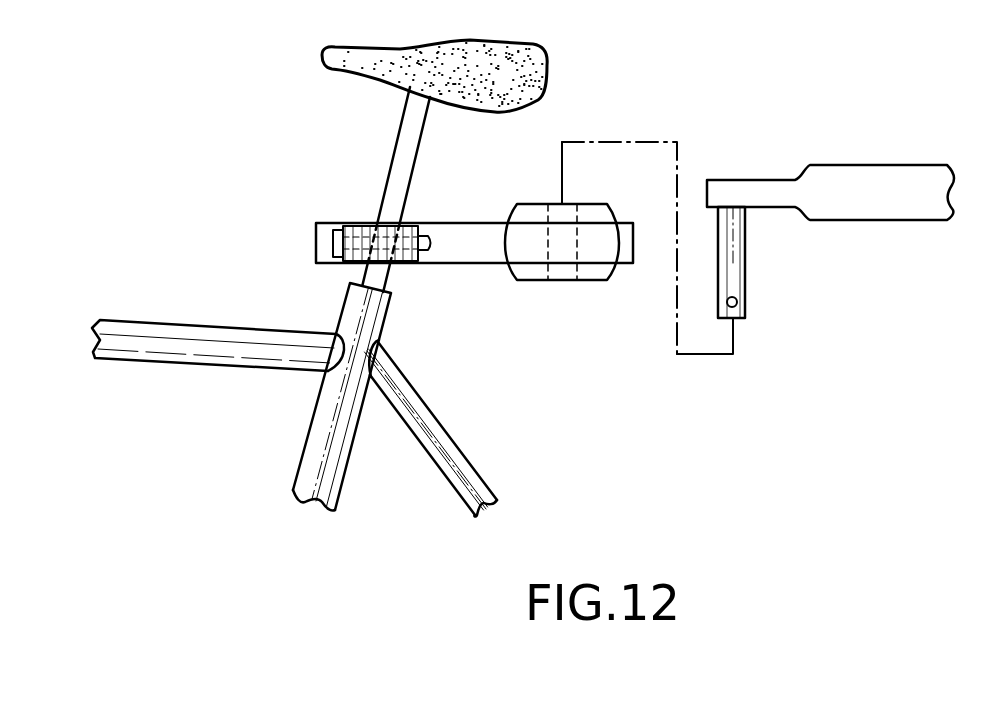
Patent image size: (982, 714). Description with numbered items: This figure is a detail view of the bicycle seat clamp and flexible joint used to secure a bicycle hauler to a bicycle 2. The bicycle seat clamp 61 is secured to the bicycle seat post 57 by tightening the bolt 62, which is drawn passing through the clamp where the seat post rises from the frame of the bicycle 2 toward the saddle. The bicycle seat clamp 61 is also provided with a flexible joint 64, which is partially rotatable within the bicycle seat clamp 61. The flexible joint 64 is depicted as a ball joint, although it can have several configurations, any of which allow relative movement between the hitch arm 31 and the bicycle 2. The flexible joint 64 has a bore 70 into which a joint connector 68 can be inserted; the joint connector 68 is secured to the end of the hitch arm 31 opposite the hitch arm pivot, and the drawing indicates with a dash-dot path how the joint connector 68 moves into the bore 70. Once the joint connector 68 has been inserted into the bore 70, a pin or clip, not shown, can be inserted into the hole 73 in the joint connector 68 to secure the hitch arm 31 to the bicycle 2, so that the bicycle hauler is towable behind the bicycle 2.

The bicycle 2 is at (205, 327).
The hitch arm 31 is at (917, 165).
The bicycle seat post 57 is at (387, 278).
The bicycle seat clamp 61 is at (455, 222).
The bolt 62 is at (333, 243).
The flexible joint 64 is at (603, 282).
The joint connector 68 is at (745, 242).
The bore 70 is at (577, 247).
The hole 73 is at (738, 305).